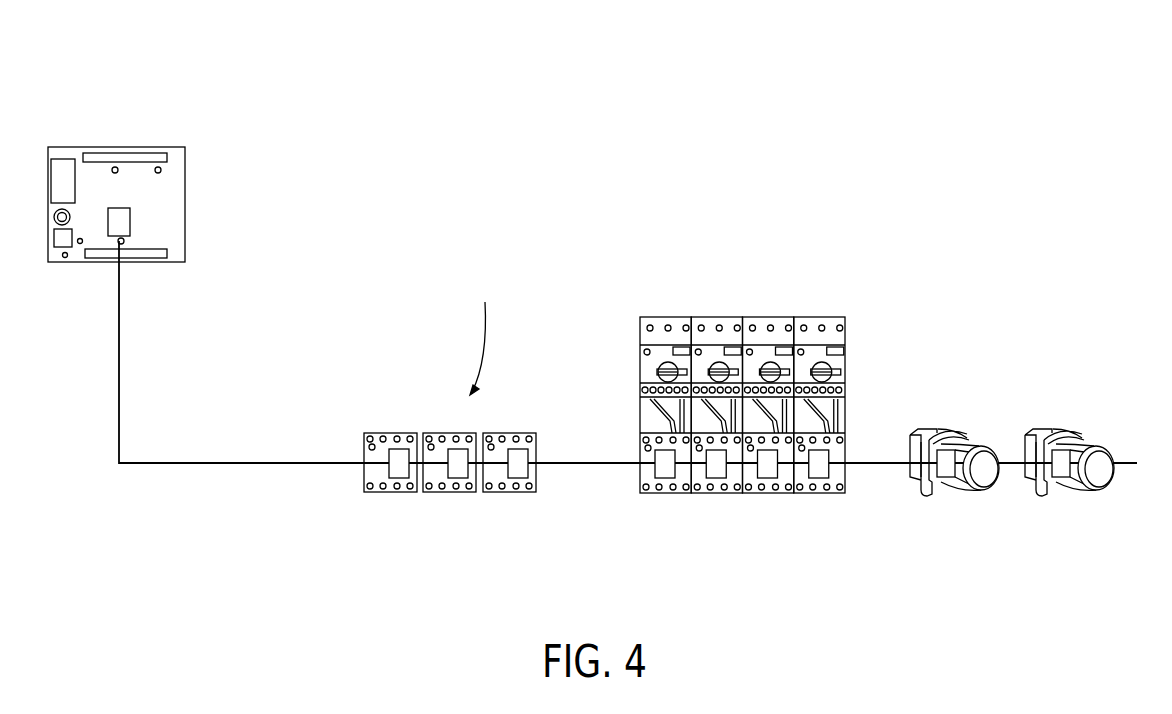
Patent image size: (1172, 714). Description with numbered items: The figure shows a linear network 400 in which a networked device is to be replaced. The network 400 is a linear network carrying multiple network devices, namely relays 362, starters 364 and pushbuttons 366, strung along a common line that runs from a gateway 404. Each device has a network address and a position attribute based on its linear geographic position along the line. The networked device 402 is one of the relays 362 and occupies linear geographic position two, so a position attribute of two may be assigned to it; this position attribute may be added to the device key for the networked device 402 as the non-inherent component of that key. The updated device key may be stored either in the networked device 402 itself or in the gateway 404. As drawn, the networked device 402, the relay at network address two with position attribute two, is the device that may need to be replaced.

The linear network 400 is at (130, 56).
The networked device 402 is at (435, 433).
The gateway 404 is at (116, 174).
The relays 362 is at (450, 487).
The starters 364 is at (742, 449).
The pushbuttons 366 is at (1012, 505).